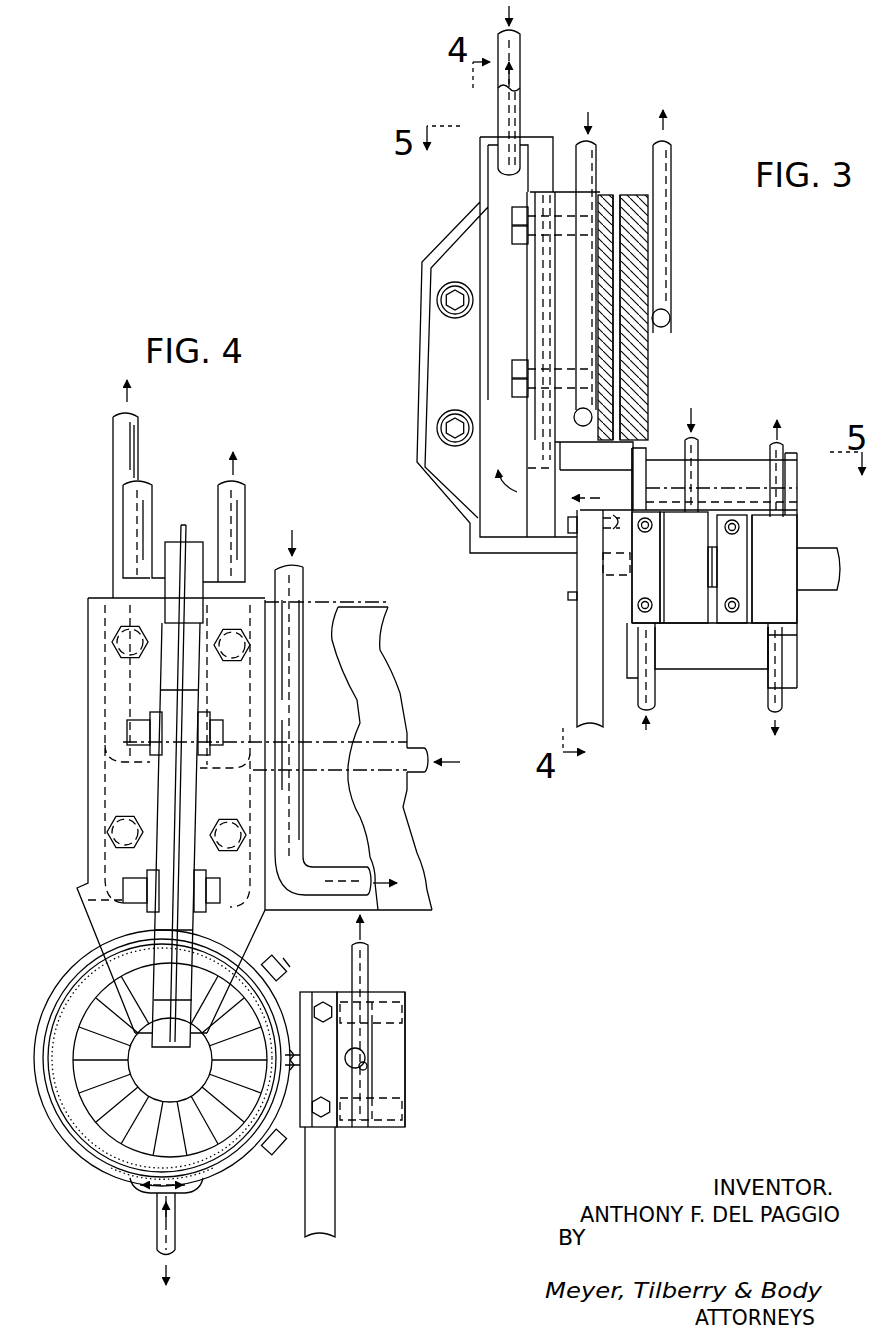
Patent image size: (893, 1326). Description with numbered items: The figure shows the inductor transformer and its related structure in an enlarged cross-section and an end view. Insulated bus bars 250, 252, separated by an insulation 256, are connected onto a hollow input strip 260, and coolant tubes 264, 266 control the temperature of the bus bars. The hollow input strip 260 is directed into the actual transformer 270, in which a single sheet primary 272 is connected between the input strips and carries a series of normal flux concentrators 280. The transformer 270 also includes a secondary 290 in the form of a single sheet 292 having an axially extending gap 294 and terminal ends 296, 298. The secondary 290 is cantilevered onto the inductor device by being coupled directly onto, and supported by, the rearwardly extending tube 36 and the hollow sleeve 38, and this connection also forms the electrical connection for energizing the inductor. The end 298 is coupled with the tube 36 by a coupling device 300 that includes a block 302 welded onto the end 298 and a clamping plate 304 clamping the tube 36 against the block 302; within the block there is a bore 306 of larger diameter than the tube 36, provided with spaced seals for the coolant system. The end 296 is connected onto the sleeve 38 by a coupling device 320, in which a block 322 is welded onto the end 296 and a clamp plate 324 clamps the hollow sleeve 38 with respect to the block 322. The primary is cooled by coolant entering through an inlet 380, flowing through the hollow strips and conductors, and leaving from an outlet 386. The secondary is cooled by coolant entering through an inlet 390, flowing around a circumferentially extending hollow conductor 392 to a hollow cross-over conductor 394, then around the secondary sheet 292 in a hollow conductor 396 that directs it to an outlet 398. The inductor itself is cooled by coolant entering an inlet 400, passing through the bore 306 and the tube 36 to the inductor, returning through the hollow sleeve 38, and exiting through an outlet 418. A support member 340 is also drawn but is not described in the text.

In FIG. 3, the rearwardly extending tube 36 is at (625, 578).
In FIG. 4, the rearwardly extending tube 36 is at (363, 1057).
In FIG. 3, the hollow sleeve 38 is at (827, 551).
In FIG. 3, the insulated bus bar 250 is at (445, 362).
In FIG. 4, the insulated bus bar 250 is at (93, 727).
In FIG. 3, the insulated bus bar 252 is at (647, 368).
In FIG. 4, the insulated bus bar 252 is at (374, 608).
In FIG. 3, the insulation 256 is at (530, 145).
In FIG. 4, the insulation 256 is at (185, 528).
In FIG. 3, the hollow input strip 260 is at (577, 482).
In FIG. 3, the coolant tube 264 is at (590, 144).
In FIG. 4, the coolant tube 264 is at (300, 572).
In FIG. 3, the coolant tube 266 is at (669, 168).
In FIG. 4, the coolant tube 266 is at (138, 424).
In FIG. 3, the transformer 270 is at (726, 466).
In FIG. 4, the transformer 270 is at (62, 960).
In FIG. 4, the single sheet primary 272 is at (222, 1168).
In FIG. 4, the flux concentrators 280 is at (240, 1017).
In FIG. 3, the secondary 290 is at (707, 462).
In FIG. 4, the single sheet 292 is at (137, 1192).
In FIG. 4, the axially extending gap 294 is at (333, 1000).
In FIG. 4, the terminal end 296 is at (284, 1000).
In FIG. 4, the terminal end 298 is at (280, 1155).
In FIG. 3, the coupling device 300 is at (678, 614).
In FIG. 4, the coupling device 300 is at (405, 1052).
In FIG. 3, the block 302 is at (700, 522).
In FIG. 4, the block 302 is at (343, 1023).
In FIG. 3, the clamping plate 304 is at (642, 542).
In FIG. 4, the clamping plate 304 is at (407, 1077).
In FIG. 4, the bore 306 is at (366, 1072).
In FIG. 3, the coupling device 320 is at (793, 523).
In FIG. 4, the block 322 is at (282, 1043).
In FIG. 3, the clamp plate 324 is at (732, 618).
In FIG. 3, the support arm 340 is at (578, 644).
In FIG. 4, the support arm 340 is at (327, 1198).
In FIG. 3, the inlet 380 is at (520, 48).
In FIG. 4, the inlet 380 is at (148, 483).
In FIG. 3, the outlet 386 is at (518, 100).
In FIG. 4, the outlet 386 is at (246, 497).
In FIG. 3, the inlet 390 is at (640, 700).
In FIG. 4, the inlet 390 is at (172, 1213).
In FIG. 3, the circumferentially extending hollow conductor 392 is at (640, 455).
In FIG. 4, the circumferentially extending hollow conductor 392 is at (72, 1142).
In FIG. 3, the hollow cross-over conductor 394 is at (790, 502).
In FIG. 4, the hollow cross-over conductor 394 is at (283, 960).
In FIG. 3, the hollow conductor 396 is at (795, 653).
In FIG. 3, the outlet 398 is at (784, 700).
In FIG. 4, the outlet 398 is at (175, 1253).
In FIG. 3, the inlet 400 is at (698, 448).
In FIG. 4, the inlet 400 is at (368, 978).
In FIG. 3, the outlet 418 is at (785, 448).
In FIG. 4, the outlet 418 is at (367, 947).